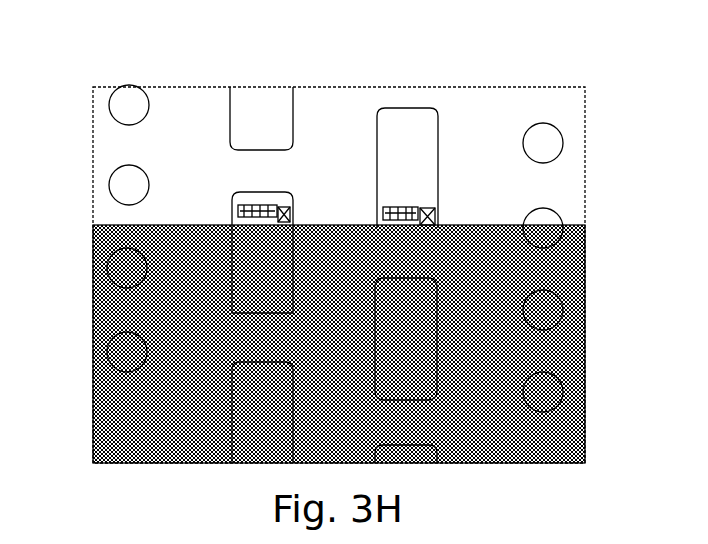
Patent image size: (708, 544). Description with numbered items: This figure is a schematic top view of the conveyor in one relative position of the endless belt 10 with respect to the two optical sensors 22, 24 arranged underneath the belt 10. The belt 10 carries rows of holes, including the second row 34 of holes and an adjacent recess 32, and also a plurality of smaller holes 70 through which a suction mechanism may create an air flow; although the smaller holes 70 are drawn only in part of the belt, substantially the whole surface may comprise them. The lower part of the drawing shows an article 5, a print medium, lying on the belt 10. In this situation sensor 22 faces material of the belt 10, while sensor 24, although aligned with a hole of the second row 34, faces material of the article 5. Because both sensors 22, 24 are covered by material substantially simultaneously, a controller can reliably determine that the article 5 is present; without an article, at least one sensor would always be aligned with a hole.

The article 5 is at (93, 316).
The belt 10 is at (336, 103).
The sensor 22 is at (285, 210).
The sensor 24 is at (414, 212).
The recess 32 is at (263, 97).
The second row of holes 34 is at (401, 123).
The smaller holes 70 is at (553, 147).